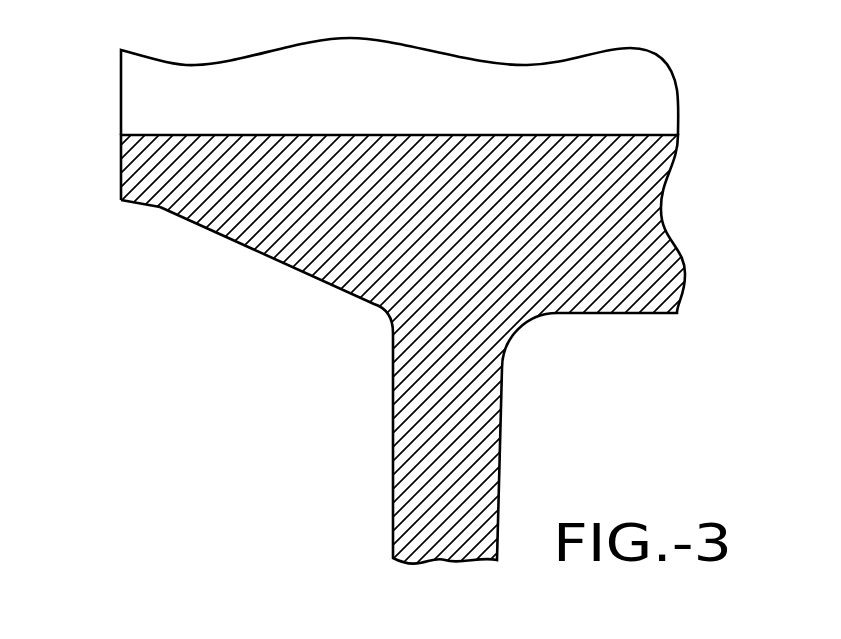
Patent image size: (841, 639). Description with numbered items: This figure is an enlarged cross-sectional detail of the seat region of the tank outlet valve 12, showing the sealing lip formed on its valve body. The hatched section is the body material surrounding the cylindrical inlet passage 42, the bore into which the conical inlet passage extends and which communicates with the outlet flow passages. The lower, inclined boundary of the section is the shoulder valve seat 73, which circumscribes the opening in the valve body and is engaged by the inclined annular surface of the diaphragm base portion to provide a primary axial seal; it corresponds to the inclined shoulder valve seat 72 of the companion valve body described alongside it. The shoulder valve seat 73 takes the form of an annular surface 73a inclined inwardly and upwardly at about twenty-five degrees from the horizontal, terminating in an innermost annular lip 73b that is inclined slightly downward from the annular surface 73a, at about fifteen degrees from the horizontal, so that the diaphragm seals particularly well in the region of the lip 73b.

The tank outlet valve 12 is at (420, 300).
The cylindrical inlet passage 42 is at (436, 135).
The shoulder valve seat 72 is at (178, 158).
The shoulder valve seat 73 is at (238, 291).
The annular surface 73a is at (288, 265).
The annular lip 73b is at (137, 203).